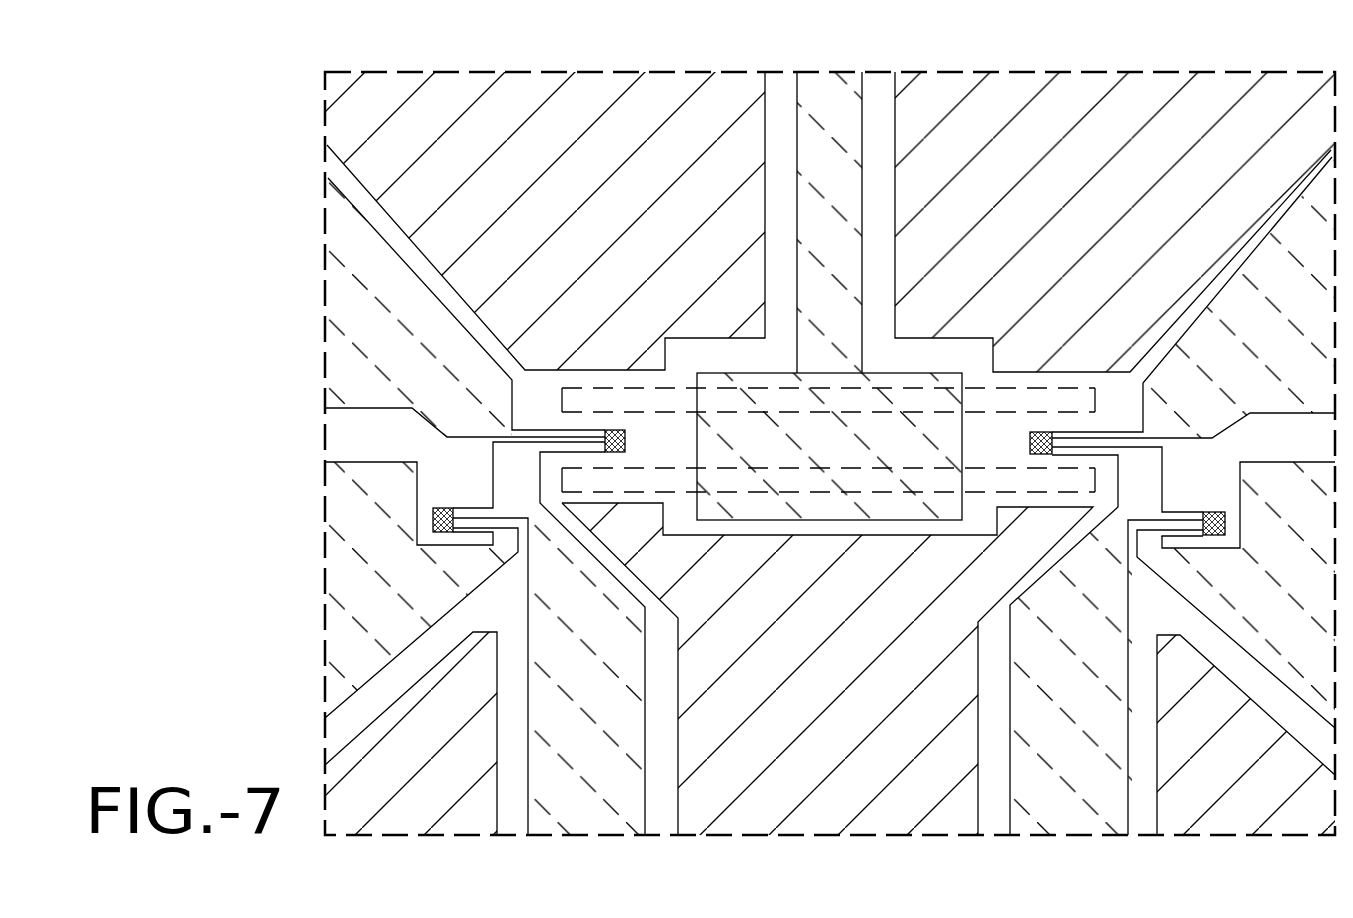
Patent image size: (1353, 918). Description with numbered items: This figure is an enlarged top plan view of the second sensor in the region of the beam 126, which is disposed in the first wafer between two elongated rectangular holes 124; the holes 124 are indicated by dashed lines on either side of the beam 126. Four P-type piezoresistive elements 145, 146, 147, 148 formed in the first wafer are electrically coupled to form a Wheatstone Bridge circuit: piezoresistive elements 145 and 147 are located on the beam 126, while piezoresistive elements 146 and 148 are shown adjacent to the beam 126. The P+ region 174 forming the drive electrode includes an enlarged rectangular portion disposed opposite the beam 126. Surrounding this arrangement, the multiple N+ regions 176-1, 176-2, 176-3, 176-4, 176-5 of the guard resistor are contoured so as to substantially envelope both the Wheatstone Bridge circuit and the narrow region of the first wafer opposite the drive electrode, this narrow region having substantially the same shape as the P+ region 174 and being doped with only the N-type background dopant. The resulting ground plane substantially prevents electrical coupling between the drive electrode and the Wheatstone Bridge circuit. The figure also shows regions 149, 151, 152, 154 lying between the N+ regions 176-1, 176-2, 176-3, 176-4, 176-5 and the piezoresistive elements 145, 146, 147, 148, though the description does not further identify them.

The elongated rectangular holes 124 is at (868, 400).
The beam 126 is at (807, 438).
The piezoresistive element 145 is at (1043, 432).
The piezoresistive element 146 is at (1225, 526).
The piezoresistive element 147 is at (629, 430).
The piezoresistive element 148 is at (433, 518).
The recess 149 is at (393, 624).
The recess 151 is at (400, 362).
The recess 152 is at (1290, 355).
The recess 154 is at (1292, 625).
The P+ region 174 is at (832, 176).
The N+ region 176-1 is at (1270, 799).
The N+ region 176-2 is at (443, 797).
The N+ region 176-3 is at (1138, 220).
The N+ region 176-4 is at (600, 220).
The N+ region 176-5 is at (860, 731).